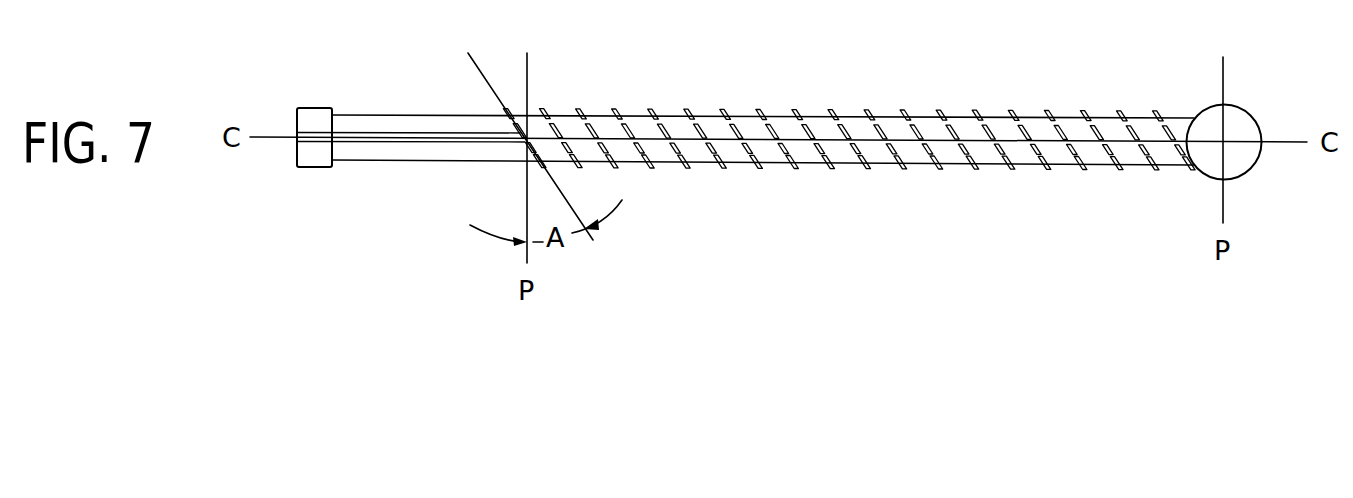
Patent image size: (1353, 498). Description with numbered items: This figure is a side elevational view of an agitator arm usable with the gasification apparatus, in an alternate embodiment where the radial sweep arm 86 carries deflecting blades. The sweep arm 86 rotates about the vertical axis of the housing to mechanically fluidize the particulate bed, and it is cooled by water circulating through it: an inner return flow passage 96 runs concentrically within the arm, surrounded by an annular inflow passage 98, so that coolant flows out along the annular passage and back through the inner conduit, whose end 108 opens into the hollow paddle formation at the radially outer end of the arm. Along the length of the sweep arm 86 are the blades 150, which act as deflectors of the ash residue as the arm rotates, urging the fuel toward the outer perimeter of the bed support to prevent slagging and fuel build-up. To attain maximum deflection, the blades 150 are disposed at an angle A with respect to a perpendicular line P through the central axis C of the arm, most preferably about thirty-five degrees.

The radial sweep arm 86 is at (1069, 94).
The inner return flow passage 96 is at (431, 135).
The annular inflow passage 98 is at (364, 152).
The end of inner conduit 108 is at (314, 115).
The blades 150 is at (873, 112).